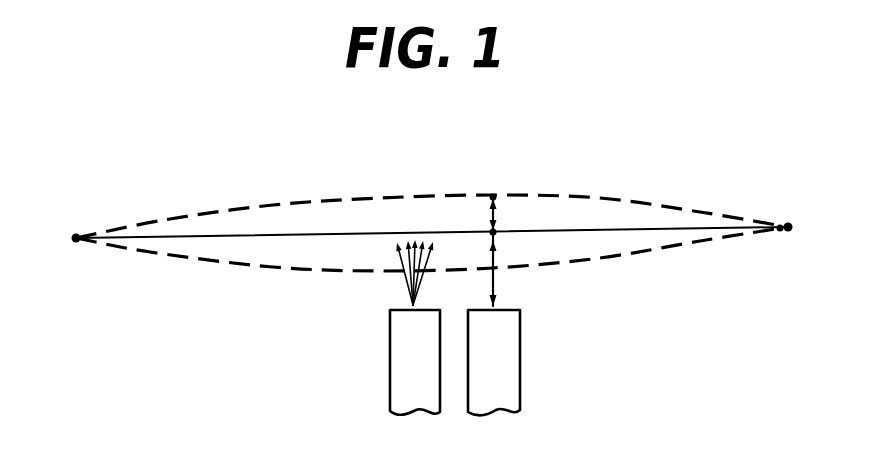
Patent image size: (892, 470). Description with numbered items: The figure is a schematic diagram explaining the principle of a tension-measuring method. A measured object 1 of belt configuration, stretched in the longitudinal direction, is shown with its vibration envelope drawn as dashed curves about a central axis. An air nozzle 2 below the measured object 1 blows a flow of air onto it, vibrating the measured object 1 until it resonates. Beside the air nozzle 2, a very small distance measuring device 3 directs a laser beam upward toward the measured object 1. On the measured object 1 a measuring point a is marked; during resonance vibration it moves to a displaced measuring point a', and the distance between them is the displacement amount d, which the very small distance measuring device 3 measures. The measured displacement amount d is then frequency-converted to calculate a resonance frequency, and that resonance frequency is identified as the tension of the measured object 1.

The measured object 1 is at (678, 228).
The air nozzle 2 is at (397, 373).
The very small distance measuring device 3 is at (510, 383).
The measuring point a is at (509, 200).
The displaced measuring point a' is at (506, 161).
The displacement amount d is at (492, 218).